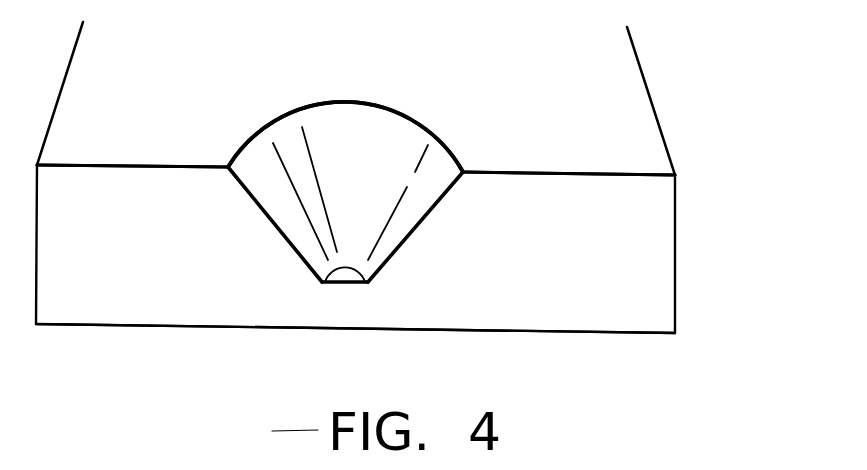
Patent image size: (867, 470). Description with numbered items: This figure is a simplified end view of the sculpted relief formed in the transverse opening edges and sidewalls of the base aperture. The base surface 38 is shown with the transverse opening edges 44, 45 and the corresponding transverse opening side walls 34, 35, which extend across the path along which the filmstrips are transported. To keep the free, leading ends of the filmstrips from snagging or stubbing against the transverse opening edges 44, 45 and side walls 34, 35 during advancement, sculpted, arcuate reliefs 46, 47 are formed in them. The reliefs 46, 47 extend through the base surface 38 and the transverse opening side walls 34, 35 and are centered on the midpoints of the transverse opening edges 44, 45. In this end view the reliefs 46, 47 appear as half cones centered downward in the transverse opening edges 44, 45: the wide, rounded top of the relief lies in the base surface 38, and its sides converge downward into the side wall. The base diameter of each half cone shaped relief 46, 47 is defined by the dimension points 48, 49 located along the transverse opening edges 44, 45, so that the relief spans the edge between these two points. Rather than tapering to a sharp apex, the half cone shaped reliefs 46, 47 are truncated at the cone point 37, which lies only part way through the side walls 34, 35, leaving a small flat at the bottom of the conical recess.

The transverse opening side wall 34 is at (655, 260).
The transverse opening side wall 35 is at (355, 328).
The cone point 37 is at (368, 293).
The base surface 38 is at (617, 93).
The transverse opening edge 44 is at (638, 172).
The transverse opening edge 45 is at (132, 166).
The relief 46 is at (412, 84).
The relief 47 is at (345, 137).
The dimension point 48 is at (230, 165).
The dimension point 49 is at (465, 171).